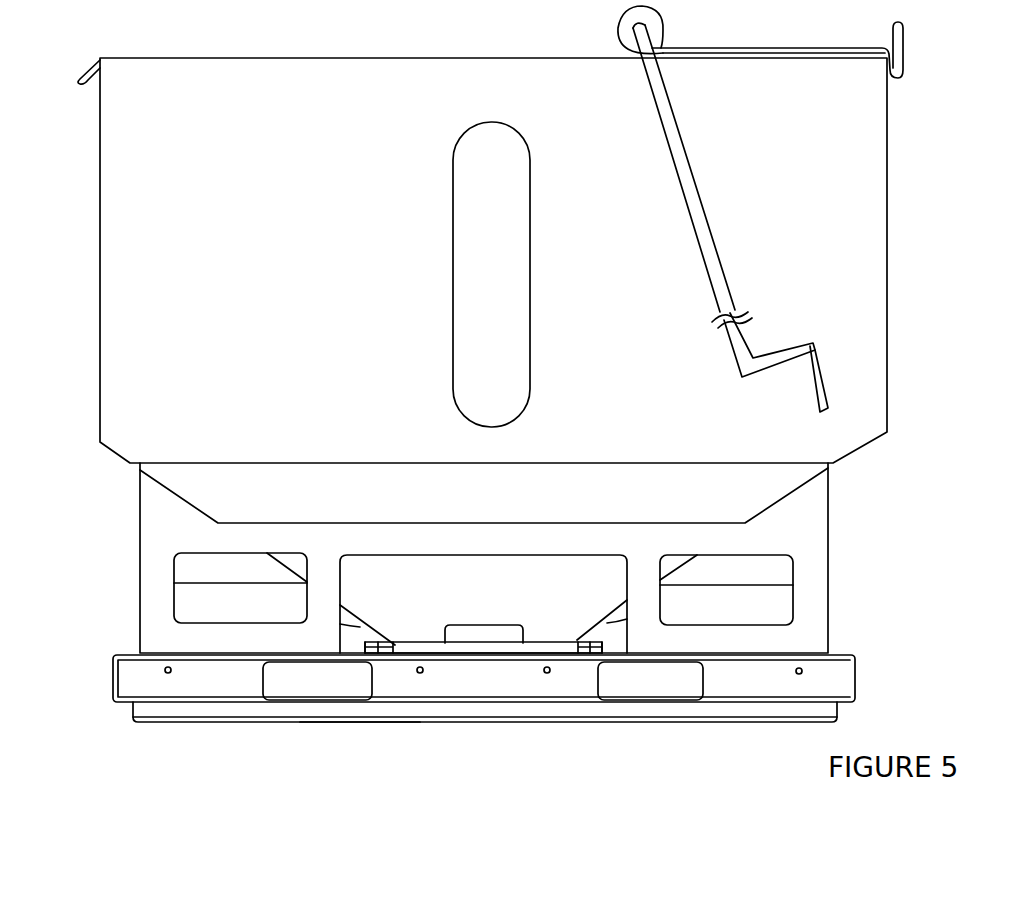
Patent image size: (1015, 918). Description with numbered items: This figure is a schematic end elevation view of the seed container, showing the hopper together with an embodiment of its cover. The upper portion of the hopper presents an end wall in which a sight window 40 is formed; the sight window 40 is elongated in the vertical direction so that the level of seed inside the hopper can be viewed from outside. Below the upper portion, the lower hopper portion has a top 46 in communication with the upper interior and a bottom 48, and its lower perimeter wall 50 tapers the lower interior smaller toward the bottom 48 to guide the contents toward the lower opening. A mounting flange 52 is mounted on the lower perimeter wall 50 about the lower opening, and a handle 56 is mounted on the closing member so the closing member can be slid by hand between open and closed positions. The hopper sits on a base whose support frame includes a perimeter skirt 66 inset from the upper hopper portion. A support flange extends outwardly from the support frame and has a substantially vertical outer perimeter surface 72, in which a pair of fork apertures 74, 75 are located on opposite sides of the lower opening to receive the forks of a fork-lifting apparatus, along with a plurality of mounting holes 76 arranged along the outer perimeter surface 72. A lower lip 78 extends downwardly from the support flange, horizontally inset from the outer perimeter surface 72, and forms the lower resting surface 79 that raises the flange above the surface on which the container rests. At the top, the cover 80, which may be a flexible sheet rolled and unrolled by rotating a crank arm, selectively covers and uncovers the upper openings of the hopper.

The sight window 40 is at (530, 310).
The top 46 is at (172, 462).
The bottom 48 is at (532, 636).
The lower perimeter wall 50 is at (200, 483).
The mounting flange 52 is at (380, 650).
The handle 56 is at (467, 645).
The perimeter skirt 66 is at (816, 538).
The outer perimeter surface 72 is at (112, 672).
The fork aperture 74 is at (262, 683).
The fork aperture 75 is at (705, 685).
The mounting holes 76 is at (170, 677).
The lower lip 78 is at (300, 712).
The lower resting surface 79 is at (357, 725).
The cover 80 is at (618, 27).